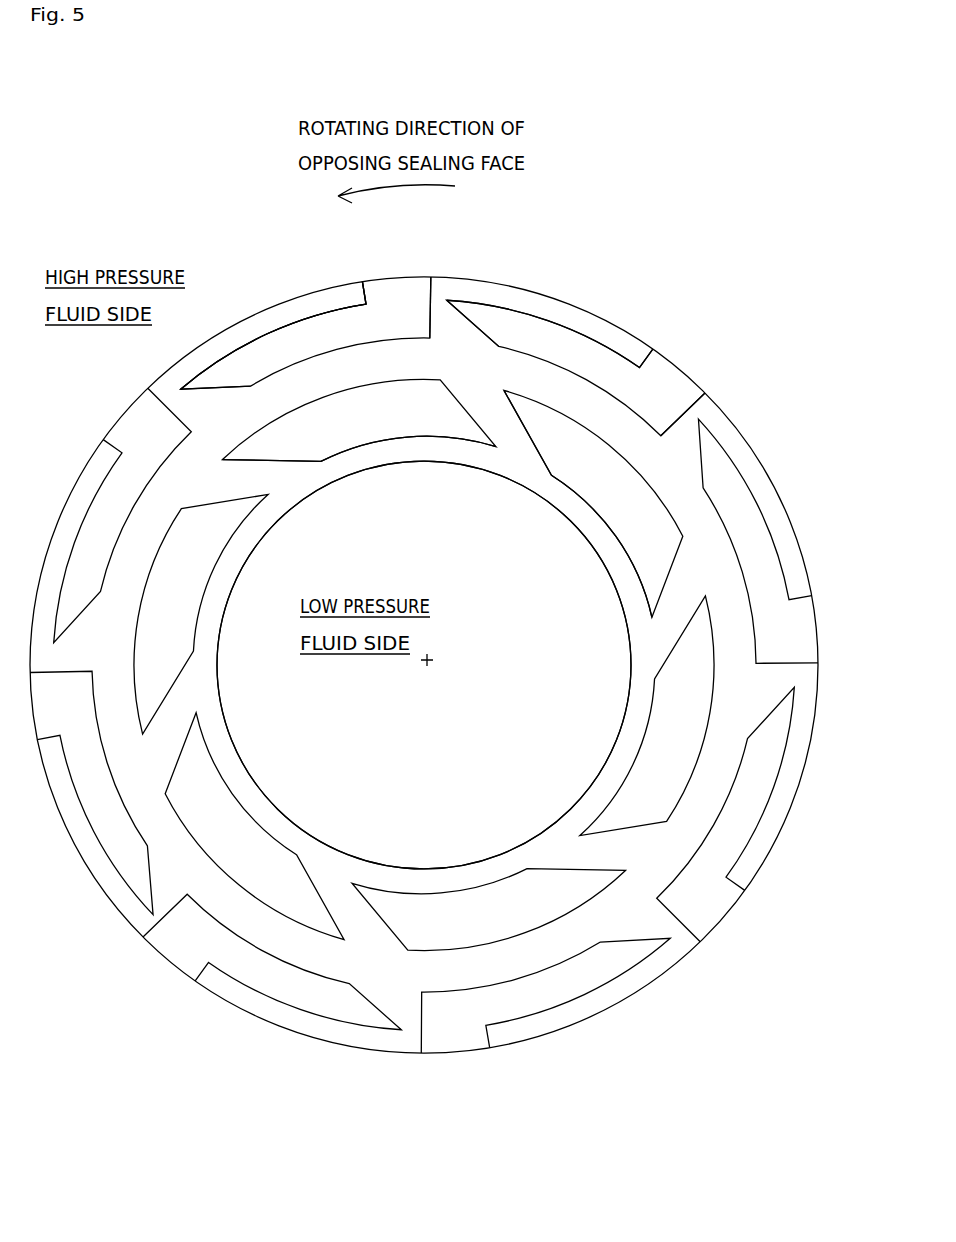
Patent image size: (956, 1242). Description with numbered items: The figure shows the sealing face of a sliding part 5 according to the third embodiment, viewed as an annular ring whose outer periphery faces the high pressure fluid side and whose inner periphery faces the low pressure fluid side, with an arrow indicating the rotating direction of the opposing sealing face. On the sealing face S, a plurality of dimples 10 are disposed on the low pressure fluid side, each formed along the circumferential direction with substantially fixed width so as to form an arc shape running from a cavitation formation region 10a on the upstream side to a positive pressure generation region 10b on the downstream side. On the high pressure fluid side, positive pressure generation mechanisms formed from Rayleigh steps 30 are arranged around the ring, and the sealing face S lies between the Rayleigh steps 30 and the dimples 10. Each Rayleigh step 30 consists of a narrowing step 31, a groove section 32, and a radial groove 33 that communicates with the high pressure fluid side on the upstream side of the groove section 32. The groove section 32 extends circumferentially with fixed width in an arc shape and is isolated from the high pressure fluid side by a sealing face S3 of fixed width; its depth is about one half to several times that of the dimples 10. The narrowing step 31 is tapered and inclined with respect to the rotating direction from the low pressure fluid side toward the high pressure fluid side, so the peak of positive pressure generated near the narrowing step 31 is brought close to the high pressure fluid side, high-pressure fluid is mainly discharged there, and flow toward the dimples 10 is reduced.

The sliding component (seal ring) 5 is at (303, 292).
The Rayleigh step 30 is at (281, 322).
The narrowing step 31 is at (220, 387).
The groove section 32 is at (320, 333).
The radial groove 33 is at (415, 295).
The dimple 10 is at (391, 455).
The cavitation formation region 10a is at (433, 423).
The positive pressure generation region 10b is at (265, 447).
The sealing face S is at (627, 440).
The sealing face S3 is at (230, 330).